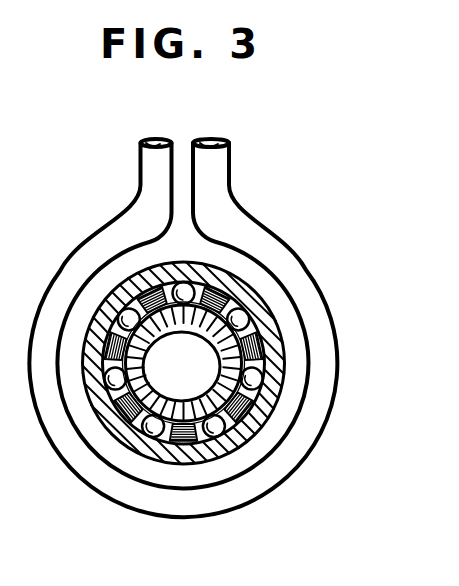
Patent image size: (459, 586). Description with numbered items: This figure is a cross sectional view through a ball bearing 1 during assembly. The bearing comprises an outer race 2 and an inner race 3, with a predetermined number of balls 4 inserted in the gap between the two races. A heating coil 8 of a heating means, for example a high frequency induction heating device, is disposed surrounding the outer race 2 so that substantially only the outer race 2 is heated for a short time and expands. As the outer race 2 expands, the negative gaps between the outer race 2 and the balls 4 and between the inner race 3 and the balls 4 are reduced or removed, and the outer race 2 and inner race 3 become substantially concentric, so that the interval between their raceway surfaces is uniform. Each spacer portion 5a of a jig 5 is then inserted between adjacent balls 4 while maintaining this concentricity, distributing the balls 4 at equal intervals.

The ball bearing 1 is at (241, 343).
The outer race 2 is at (258, 319).
The inner race 3 is at (222, 405).
The balls 4 is at (250, 376).
The jig 5 is at (265, 293).
The spacer portion 5a is at (266, 343).
The heating coil 8 is at (263, 485).